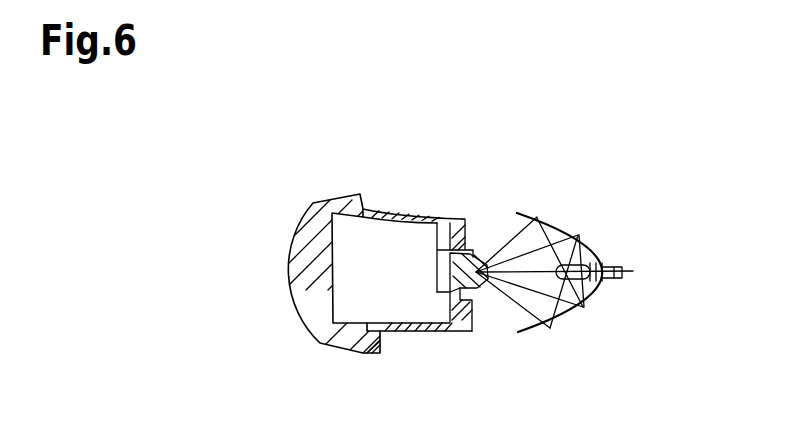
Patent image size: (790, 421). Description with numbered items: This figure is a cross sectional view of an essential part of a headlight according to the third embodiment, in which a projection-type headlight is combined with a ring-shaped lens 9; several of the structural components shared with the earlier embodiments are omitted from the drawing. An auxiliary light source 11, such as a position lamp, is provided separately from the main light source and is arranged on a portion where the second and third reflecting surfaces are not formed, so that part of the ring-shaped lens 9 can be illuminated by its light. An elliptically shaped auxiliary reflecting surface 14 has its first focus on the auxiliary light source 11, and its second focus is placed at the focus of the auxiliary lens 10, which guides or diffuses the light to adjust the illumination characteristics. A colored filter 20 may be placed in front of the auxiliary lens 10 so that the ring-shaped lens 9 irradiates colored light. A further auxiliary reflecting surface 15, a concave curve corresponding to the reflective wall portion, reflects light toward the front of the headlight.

The ring-shaped lens 9 is at (307, 225).
The auxiliary lens 10 is at (436, 247).
The auxiliary light source 11 is at (593, 248).
The auxiliary reflecting surface 14 is at (573, 321).
The auxiliary reflecting surface 15 is at (405, 328).
The colored filter 20 is at (455, 215).